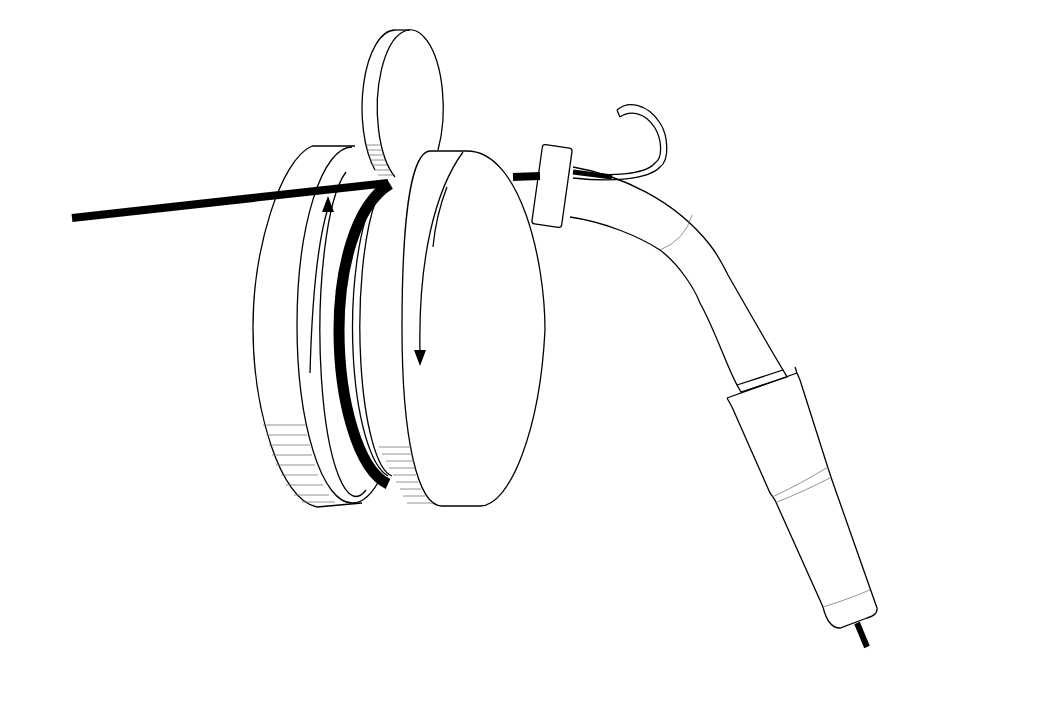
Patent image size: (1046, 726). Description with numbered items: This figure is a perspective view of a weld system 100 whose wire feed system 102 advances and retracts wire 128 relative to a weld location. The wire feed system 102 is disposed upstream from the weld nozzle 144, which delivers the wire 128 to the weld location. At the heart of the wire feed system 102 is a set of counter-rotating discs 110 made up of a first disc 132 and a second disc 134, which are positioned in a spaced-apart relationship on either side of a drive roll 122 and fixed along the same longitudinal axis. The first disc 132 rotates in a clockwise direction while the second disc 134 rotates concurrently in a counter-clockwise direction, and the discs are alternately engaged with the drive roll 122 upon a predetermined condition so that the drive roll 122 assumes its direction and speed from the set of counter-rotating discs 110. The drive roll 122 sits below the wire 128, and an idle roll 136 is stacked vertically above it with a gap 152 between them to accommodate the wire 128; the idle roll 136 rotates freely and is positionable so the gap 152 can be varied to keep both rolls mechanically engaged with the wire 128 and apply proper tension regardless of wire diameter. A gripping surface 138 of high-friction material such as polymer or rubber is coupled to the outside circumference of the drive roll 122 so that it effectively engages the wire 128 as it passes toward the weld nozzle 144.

The weld system 100 is at (815, 92).
The wire feed system 102 is at (302, 132).
The set of counter-rotating discs 110 is at (487, 526).
The drive roll 122 is at (340, 424).
The wire 128 is at (85, 222).
The first disc 132 is at (273, 367).
The second disc 134 is at (388, 392).
The idle roll 136 is at (413, 117).
The gripping surface 138 is at (340, 262).
The weld nozzle 144 is at (838, 362).
The gap 152 is at (383, 177).